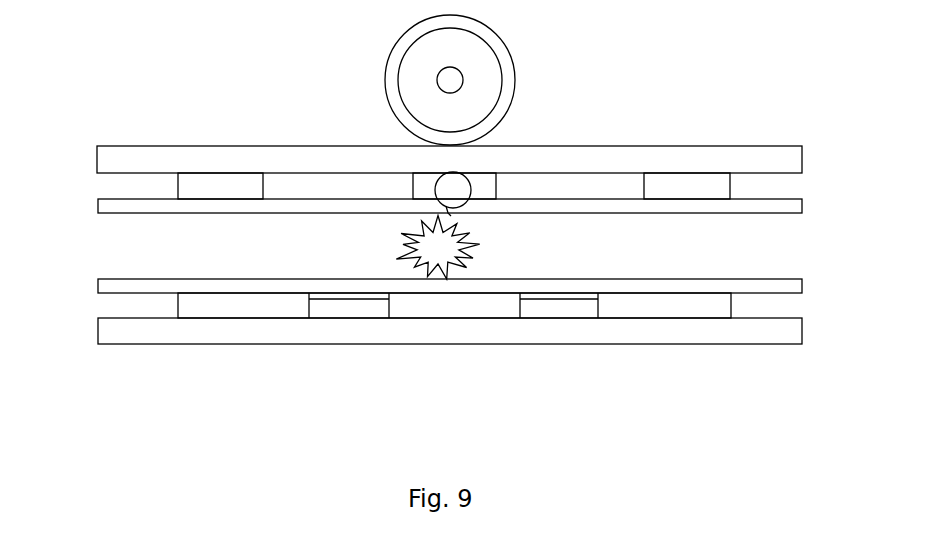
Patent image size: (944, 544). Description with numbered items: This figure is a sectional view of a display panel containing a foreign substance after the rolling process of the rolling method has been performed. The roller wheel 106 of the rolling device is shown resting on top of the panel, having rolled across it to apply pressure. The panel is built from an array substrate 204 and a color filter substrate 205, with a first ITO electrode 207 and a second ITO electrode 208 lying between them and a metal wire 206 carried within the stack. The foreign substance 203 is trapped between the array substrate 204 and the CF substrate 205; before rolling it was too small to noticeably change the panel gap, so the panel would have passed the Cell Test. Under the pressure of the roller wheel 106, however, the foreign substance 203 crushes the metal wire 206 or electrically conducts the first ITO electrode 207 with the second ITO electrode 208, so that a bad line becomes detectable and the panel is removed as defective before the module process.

The roller wheel 106 is at (422, 80).
The foreign substance 203 is at (438, 247).
The array substrate 204 is at (97, 146).
The color filter (CF) substrate 205 is at (98, 344).
The metal wire 206 is at (692, 187).
The first ITO electrode 207 is at (777, 206).
The second ITO electrode 208 is at (770, 285).